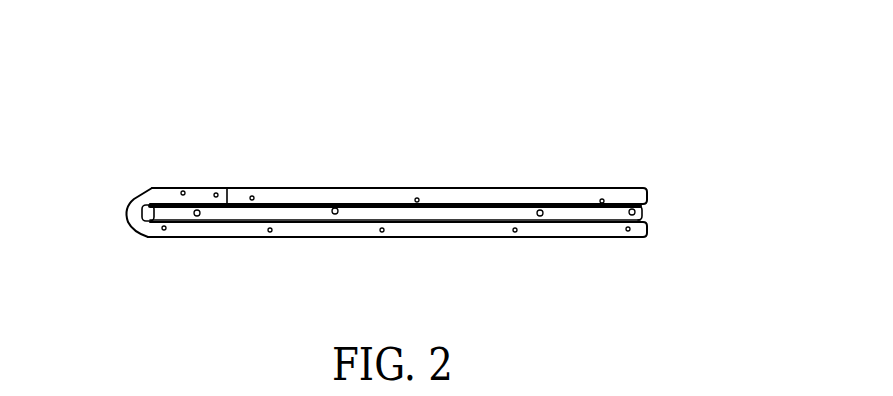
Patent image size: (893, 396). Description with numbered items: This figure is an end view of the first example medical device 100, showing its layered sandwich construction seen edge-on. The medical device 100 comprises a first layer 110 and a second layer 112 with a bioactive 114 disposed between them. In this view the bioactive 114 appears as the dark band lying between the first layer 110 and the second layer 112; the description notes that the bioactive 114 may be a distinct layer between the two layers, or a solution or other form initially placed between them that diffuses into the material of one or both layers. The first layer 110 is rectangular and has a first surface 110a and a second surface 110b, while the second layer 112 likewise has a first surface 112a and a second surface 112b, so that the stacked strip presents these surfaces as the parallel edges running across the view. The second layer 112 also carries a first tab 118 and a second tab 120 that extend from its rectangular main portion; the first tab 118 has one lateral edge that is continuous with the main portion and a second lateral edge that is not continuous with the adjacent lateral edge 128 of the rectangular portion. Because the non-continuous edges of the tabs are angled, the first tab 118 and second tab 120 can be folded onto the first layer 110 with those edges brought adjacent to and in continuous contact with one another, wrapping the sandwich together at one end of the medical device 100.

The medical device 100 is at (118, 168).
The first layer 110 is at (548, 188).
The first surface of first layer 110a is at (577, 200).
The second surface of first layer 110b is at (587, 222).
The second layer 112 is at (550, 237).
The first surface of second layer 112a is at (186, 207).
The second surface of second layer 112b is at (538, 237).
The bioactive 114 is at (314, 220).
The first tab 118 is at (508, 188).
The second tab 120 is at (187, 190).
The adjacent lateral edge of rectangular portion 128 is at (146, 235).